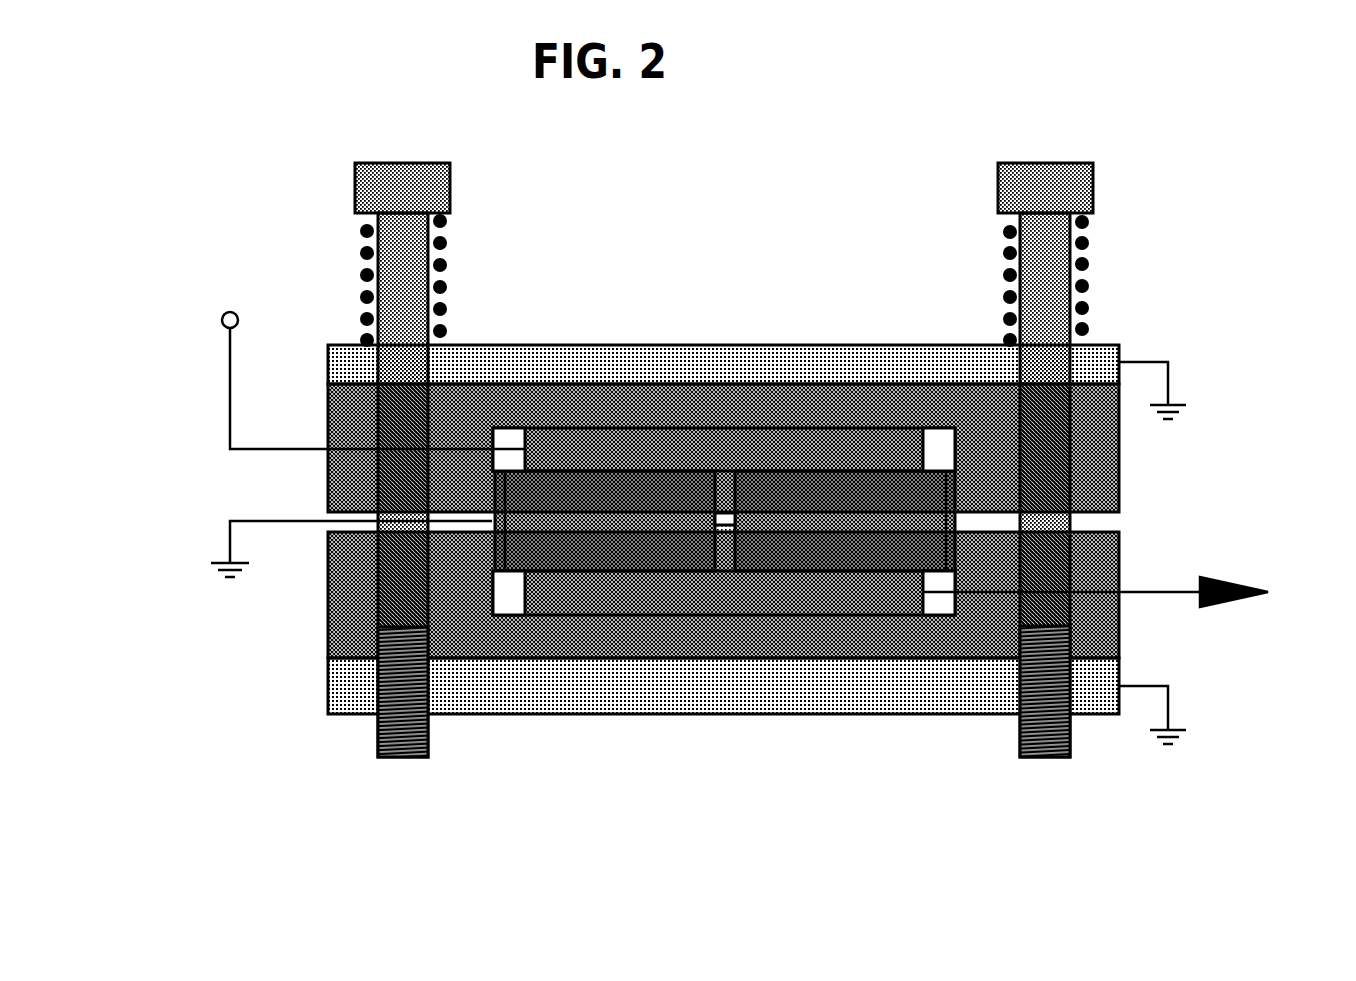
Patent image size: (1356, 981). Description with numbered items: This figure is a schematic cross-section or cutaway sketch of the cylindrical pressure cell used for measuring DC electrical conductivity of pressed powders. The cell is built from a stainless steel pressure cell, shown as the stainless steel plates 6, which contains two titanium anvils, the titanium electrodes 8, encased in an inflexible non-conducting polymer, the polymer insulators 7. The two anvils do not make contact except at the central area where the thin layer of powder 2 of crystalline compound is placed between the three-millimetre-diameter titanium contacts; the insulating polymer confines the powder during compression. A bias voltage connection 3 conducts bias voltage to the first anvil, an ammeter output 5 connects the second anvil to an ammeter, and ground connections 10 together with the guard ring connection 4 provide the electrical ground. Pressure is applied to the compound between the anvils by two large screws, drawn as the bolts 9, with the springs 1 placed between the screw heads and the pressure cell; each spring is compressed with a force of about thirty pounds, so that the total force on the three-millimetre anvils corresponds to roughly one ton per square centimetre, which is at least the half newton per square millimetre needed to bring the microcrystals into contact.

The springs 1 is at (980, 295).
The powder 2 is at (725, 500).
The bias voltage connection 3 is at (270, 374).
The guard ring connection 4 is at (264, 537).
The ammeter output 5 is at (1133, 567).
The stainless steel plates 6 is at (723, 529).
The Delrin insulators 7 is at (723, 523).
The titanium electrodes 8 is at (724, 523).
The bolts 9 is at (724, 460).
The ground connections 10 is at (1152, 553).